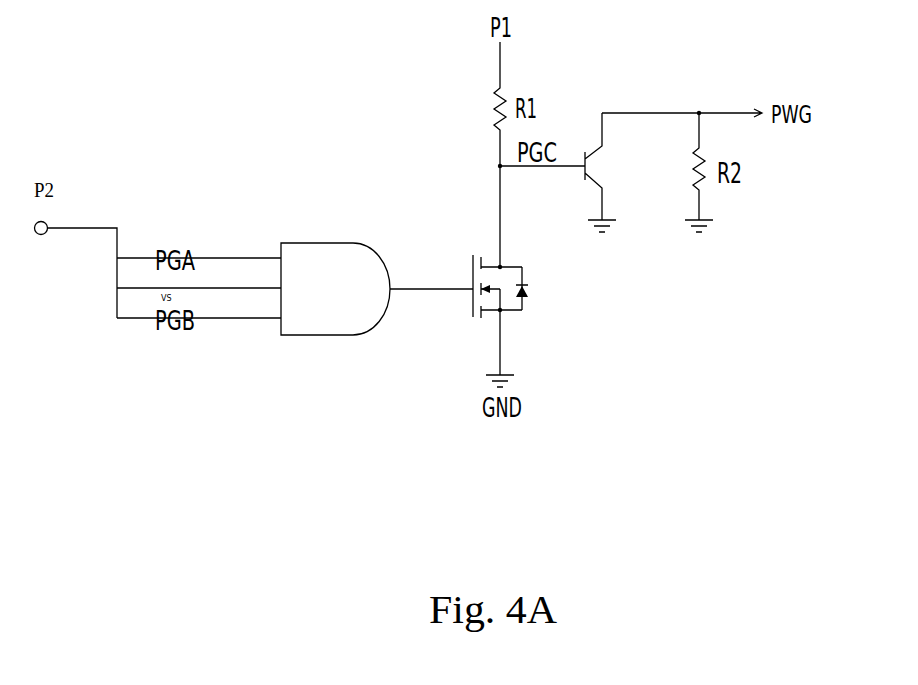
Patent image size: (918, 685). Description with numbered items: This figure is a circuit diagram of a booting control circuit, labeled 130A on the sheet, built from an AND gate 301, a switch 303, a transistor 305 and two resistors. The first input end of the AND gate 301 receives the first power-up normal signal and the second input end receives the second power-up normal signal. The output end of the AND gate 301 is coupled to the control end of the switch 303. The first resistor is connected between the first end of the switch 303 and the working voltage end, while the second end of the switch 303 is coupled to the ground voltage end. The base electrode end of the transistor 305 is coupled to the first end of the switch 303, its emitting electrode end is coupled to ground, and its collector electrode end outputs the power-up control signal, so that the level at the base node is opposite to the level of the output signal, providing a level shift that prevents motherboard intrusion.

The AND gate 301 is at (320, 243).
The switch 303 is at (510, 292).
The transistor 305 is at (606, 172).
The power good circuit 130A is at (790, 413).